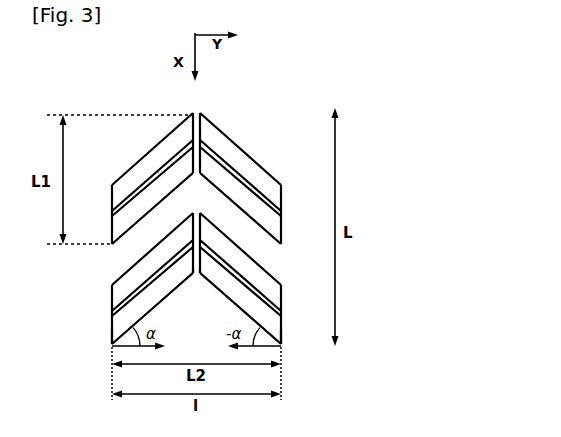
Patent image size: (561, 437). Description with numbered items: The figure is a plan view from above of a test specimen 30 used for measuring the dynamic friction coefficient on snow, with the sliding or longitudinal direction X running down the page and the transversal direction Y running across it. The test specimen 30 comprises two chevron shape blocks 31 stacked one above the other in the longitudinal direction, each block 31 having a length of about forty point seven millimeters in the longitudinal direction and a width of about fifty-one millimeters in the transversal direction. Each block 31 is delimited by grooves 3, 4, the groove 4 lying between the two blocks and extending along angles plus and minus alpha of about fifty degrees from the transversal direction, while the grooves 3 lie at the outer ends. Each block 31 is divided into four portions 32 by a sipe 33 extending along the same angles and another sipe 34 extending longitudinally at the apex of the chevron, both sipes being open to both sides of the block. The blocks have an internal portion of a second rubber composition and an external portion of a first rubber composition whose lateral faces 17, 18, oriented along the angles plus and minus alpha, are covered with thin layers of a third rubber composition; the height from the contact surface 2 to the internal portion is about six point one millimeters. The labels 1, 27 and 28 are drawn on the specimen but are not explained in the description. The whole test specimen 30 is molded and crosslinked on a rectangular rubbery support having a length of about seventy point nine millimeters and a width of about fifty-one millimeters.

The first layer / strip 1 is at (175, 144).
The contact surface 2 is at (152, 178).
The groove 3 is at (195, 338).
The groove 4 is at (125, 262).
The lateral face 17 is at (207, 182).
The lateral face 18 is at (186, 182).
The right lower edge 27 is at (208, 283).
The left lower edge 28 is at (185, 282).
The test specimen 30 is at (219, 172).
The chevron shape block 31 is at (283, 194).
The portion 32 is at (283, 233).
The sipe 33 is at (283, 316).
The sipe 34 is at (196, 276).